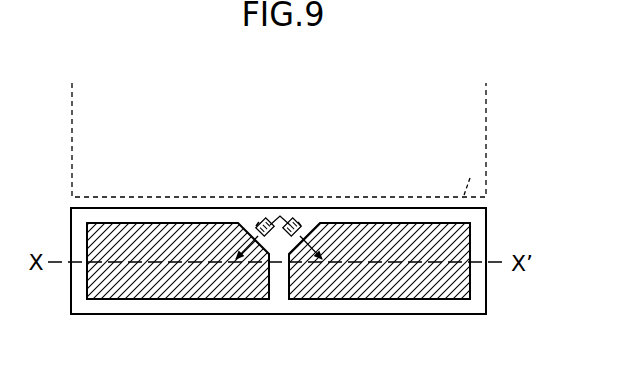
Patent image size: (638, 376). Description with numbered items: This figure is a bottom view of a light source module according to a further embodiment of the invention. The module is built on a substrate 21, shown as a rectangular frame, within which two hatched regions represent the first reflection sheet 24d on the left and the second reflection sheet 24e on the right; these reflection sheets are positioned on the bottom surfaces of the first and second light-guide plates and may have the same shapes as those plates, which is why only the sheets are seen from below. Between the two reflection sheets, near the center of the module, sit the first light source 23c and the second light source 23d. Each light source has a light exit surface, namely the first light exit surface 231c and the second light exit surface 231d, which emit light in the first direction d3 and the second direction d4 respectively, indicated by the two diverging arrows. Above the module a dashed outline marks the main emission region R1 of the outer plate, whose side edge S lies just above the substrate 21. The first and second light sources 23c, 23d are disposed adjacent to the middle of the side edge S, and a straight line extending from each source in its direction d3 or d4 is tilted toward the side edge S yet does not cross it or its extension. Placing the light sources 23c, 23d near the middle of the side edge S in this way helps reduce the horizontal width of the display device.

The substrate 21 is at (70, 289).
The main emission region R1 is at (476, 109).
The side edge S is at (472, 179).
The first reflection sheet 24d is at (174, 300).
The second reflection sheet 24e is at (383, 300).
The first light source 23c is at (262, 219).
The second light source 23d is at (296, 219).
The first light exit surface 231c is at (256, 226).
The second light exit surface 231d is at (301, 226).
The first direction d3 is at (238, 224).
The second direction d4 is at (320, 224).